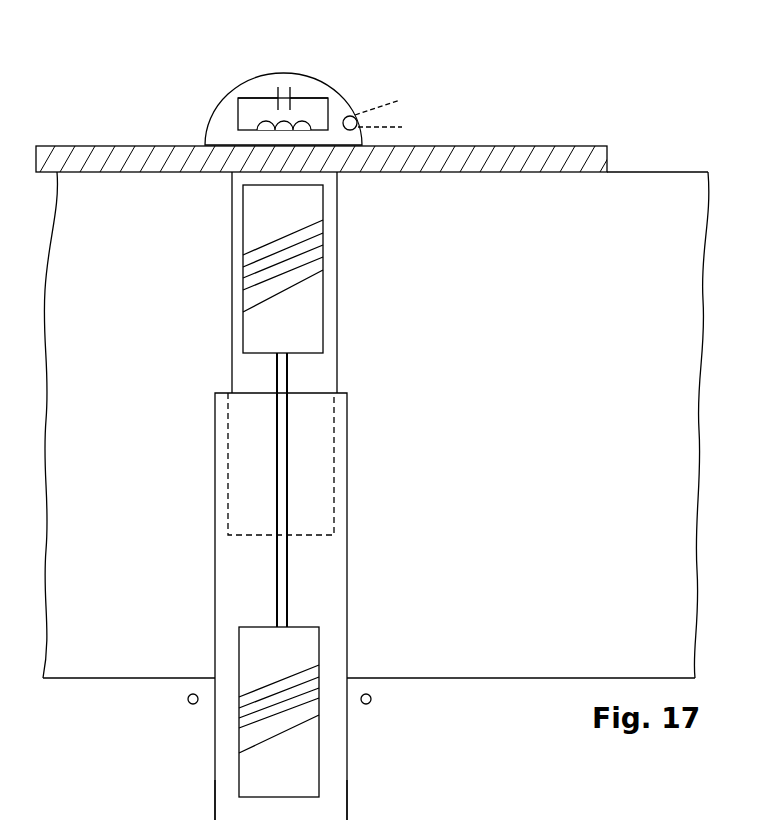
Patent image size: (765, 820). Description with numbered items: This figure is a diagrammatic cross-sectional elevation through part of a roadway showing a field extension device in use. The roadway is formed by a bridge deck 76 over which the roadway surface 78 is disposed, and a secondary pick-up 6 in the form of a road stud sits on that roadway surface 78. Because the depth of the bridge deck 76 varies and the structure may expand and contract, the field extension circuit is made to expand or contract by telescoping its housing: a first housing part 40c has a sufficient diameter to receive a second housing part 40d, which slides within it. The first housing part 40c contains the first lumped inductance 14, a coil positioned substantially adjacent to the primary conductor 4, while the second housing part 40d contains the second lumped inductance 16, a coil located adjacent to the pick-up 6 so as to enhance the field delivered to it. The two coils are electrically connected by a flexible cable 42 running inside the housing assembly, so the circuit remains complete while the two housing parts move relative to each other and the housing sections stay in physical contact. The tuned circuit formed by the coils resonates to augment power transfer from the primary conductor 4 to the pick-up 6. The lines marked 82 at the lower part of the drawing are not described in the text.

The secondary pick-up 6 is at (235, 90).
The roadway surface 78 is at (468, 160).
The bridge deck 76 is at (376, 425).
The second housing part 40d is at (232, 375).
The second lumped inductance 16 is at (300, 262).
The flexible cable 42 is at (277, 584).
The first housing part 40c is at (227, 573).
The first lumped inductance 14 is at (300, 653).
The primary conductor 4 is at (188, 700).
The pipe walls / bore 82 is at (135, 819).